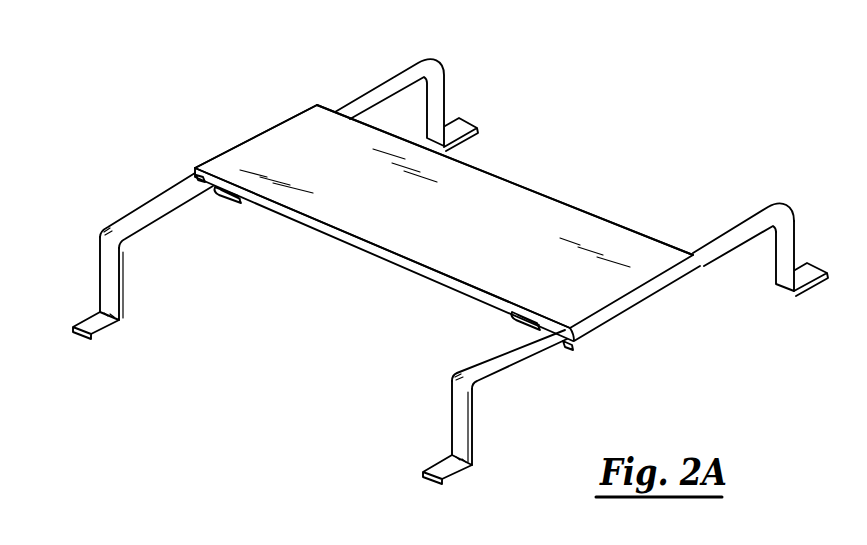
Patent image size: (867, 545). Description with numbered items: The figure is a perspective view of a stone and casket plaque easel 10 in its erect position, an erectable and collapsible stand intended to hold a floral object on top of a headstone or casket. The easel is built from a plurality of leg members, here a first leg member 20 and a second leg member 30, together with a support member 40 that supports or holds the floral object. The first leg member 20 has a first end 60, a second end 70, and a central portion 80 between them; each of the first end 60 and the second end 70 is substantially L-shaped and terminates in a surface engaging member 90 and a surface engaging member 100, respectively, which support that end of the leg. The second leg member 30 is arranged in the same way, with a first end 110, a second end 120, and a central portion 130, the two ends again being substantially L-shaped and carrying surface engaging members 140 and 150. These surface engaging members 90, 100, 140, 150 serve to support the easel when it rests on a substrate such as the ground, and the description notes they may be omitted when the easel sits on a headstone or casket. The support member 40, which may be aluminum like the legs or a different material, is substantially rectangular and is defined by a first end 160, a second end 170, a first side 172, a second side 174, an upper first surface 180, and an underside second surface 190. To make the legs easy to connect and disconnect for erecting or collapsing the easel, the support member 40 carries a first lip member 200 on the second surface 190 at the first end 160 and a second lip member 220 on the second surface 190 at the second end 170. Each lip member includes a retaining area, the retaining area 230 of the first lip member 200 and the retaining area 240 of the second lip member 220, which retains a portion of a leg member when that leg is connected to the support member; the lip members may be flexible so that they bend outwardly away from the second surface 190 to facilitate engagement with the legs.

The stone and casket plaque easel 10 is at (586, 83).
The first leg member 20 is at (117, 216).
The second leg member 30 is at (490, 374).
The support member 40 is at (528, 186).
The first end 60 is at (98, 268).
The second end 70 is at (447, 88).
The central portion 80 is at (157, 196).
The surface engaging member 90 is at (101, 340).
The surface engaging member 100 is at (469, 133).
The first end 110 is at (450, 401).
The second end 120 is at (797, 221).
The central portion 130 is at (708, 263).
The surface engaging member 140 is at (446, 484).
The surface engaging member 150 is at (820, 286).
The first end 160 is at (259, 137).
The second end 170 is at (647, 300).
The first side 172 is at (314, 228).
The second side 174 is at (564, 203).
The first surface 180 is at (603, 230).
The second surface 190 is at (367, 246).
The first lip member 200 is at (224, 202).
The second lip member 220 is at (513, 321).
The retaining area 230 is at (190, 177).
The retaining area 240 is at (565, 348).